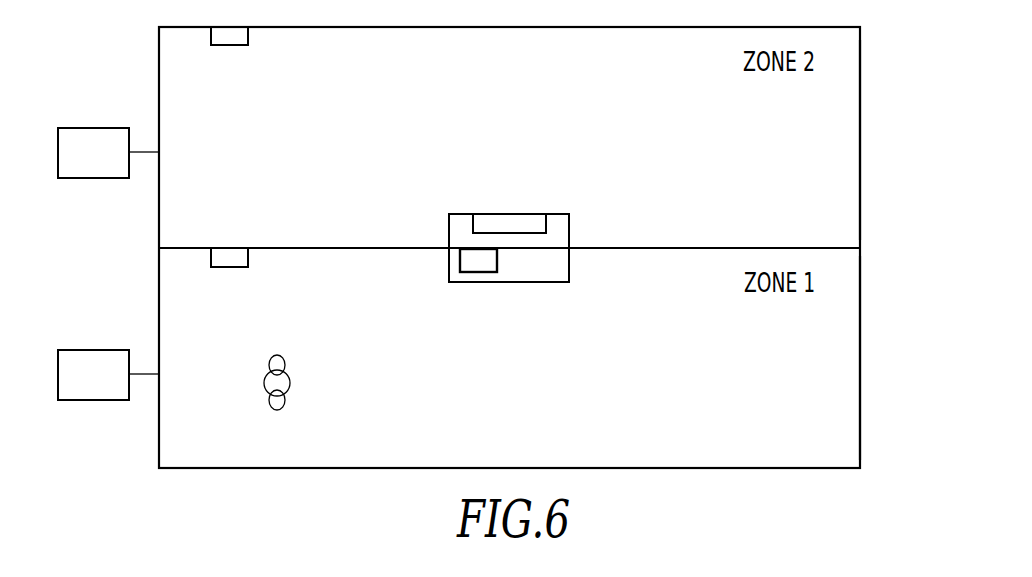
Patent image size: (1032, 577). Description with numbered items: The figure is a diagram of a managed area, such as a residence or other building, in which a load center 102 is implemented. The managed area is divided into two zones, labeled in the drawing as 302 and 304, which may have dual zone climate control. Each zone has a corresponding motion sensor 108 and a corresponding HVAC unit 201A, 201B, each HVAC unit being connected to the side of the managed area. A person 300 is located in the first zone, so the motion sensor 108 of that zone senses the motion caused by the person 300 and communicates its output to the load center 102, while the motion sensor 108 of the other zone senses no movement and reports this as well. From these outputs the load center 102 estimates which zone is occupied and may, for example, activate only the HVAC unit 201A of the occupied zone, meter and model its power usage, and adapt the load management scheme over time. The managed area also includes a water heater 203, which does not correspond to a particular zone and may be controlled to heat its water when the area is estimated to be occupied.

The load center 102 is at (512, 222).
The motion sensor 108 is at (227, 46).
The HVAC unit 201A is at (91, 128).
The HVAC unit 201B is at (91, 350).
The water heater 203 is at (473, 265).
The person 300 is at (290, 380).
The zone 2 302 is at (860, 100).
The zone 1 304 is at (860, 319).